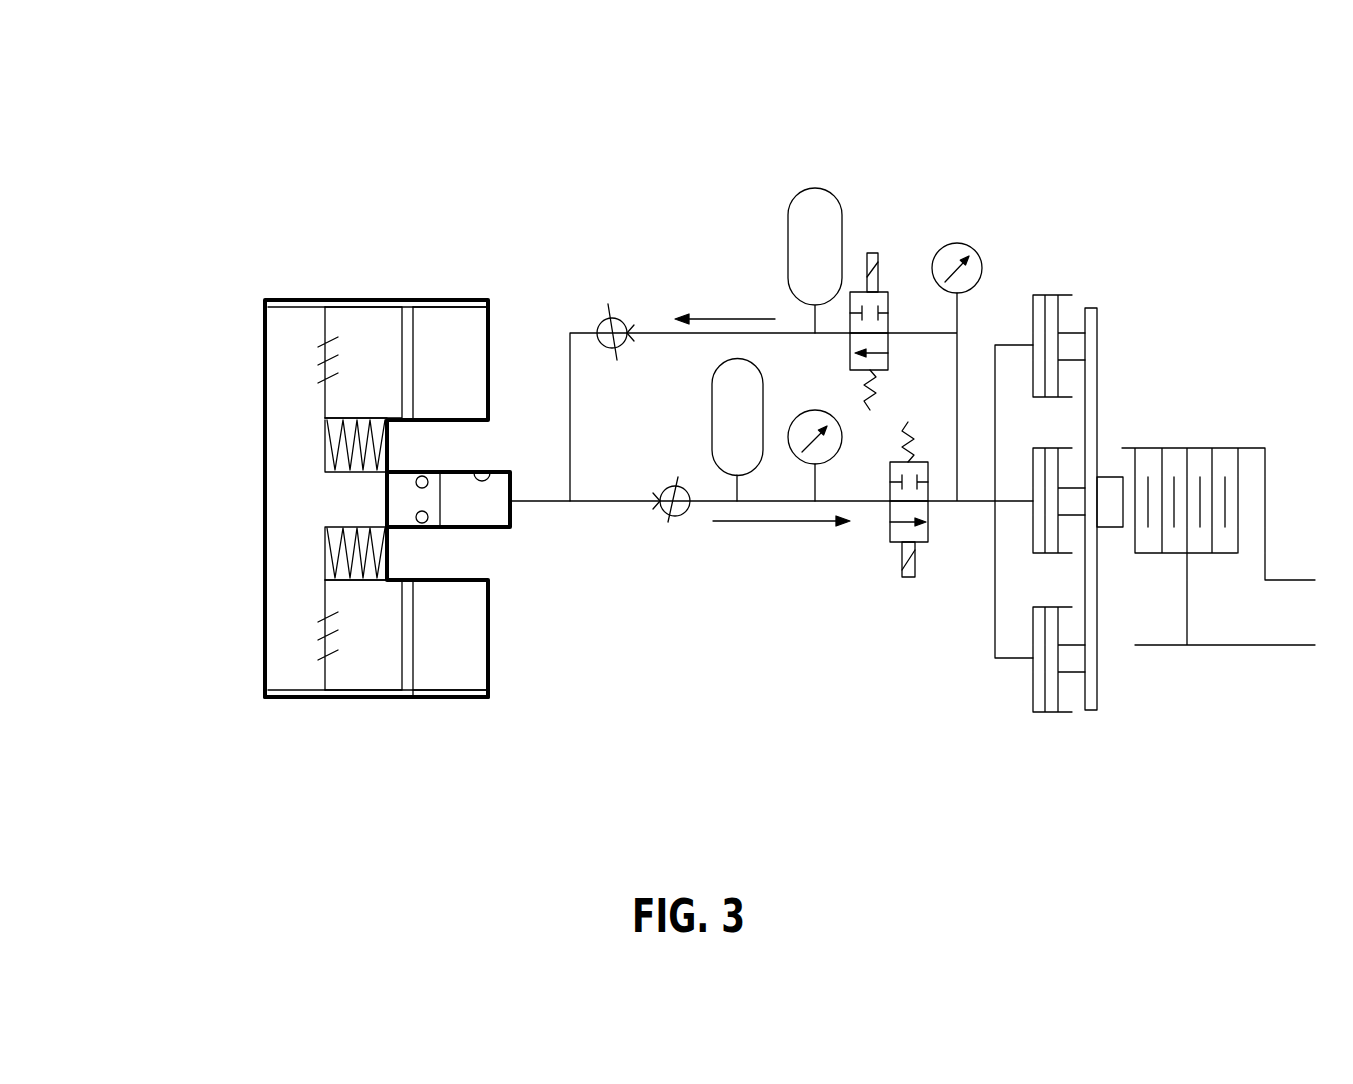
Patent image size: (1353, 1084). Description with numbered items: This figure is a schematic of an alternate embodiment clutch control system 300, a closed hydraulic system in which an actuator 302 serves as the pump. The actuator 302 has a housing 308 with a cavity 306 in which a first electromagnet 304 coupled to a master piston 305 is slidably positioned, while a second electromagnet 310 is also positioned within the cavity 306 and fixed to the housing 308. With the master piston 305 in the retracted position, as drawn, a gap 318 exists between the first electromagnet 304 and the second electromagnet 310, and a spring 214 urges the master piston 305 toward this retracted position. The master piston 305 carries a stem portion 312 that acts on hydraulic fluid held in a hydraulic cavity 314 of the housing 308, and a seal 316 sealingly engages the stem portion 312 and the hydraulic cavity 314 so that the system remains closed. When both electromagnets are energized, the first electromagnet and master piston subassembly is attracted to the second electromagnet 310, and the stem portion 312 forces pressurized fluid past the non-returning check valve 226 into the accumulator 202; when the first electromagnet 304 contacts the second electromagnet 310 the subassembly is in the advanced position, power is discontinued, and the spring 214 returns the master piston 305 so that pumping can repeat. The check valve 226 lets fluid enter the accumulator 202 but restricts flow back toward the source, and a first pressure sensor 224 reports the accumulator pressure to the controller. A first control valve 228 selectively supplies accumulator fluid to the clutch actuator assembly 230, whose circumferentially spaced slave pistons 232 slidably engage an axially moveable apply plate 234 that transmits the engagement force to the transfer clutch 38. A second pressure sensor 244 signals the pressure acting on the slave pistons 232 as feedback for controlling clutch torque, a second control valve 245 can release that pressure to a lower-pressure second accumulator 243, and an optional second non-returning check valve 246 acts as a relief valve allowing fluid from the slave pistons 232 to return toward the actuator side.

The clutch control system 300 is at (218, 139).
The actuator 302 is at (416, 742).
The first electromagnet 304 is at (350, 322).
The master piston 305 is at (283, 323).
The cavity 306 is at (292, 697).
The housing 308 is at (327, 700).
The second electromagnet 310 is at (455, 320).
The stem portion 312 is at (397, 498).
The hydraulic cavity 314 is at (490, 476).
The seal 316 is at (422, 522).
The gap 318 is at (407, 310).
The spring 214 is at (353, 458).
The accumulator 202 is at (722, 410).
The first pressure sensor 224 is at (807, 457).
The non-returning check valve 226 is at (666, 516).
The first control valve 228 is at (887, 530).
The clutch actuator assembly 230 is at (1060, 734).
The slave pistons 232 is at (1052, 324).
The apply plate 234 is at (1090, 700).
The second accumulator 243 is at (812, 195).
The second pressure sensor 244 is at (952, 248).
The second control valve 245 is at (885, 292).
The second non-returning check valve 246 is at (614, 318).
The transfer clutch 38 is at (1238, 382).